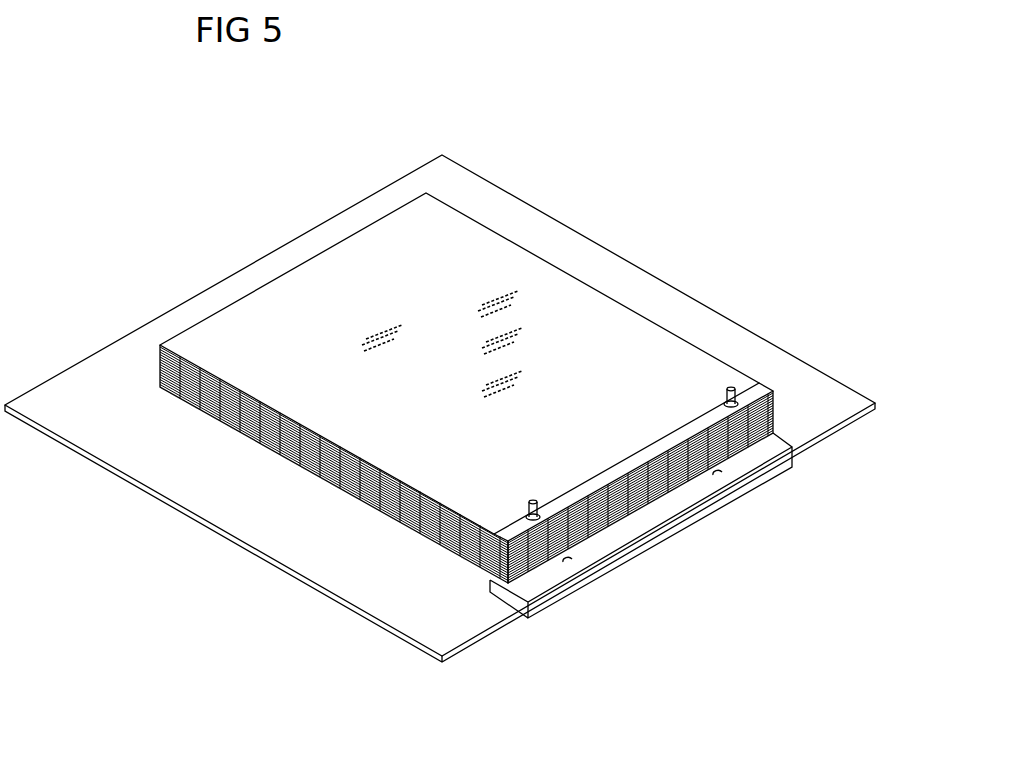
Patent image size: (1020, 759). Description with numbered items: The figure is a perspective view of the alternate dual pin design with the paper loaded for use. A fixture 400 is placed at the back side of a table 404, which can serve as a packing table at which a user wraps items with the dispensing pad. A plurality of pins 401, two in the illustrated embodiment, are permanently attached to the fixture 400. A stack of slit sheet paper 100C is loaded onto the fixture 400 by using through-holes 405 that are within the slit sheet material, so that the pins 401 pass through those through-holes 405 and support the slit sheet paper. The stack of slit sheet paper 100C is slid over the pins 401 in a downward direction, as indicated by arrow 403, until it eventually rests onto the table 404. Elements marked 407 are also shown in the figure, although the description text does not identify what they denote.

The stack of slit sheet paper 100C is at (585, 287).
The fixture 400 is at (790, 446).
The pins 401 is at (732, 387).
The arrow 403 is at (788, 408).
The table 404 is at (157, 318).
The through-holes 405 is at (738, 395).
The locating pins 407 is at (496, 531).